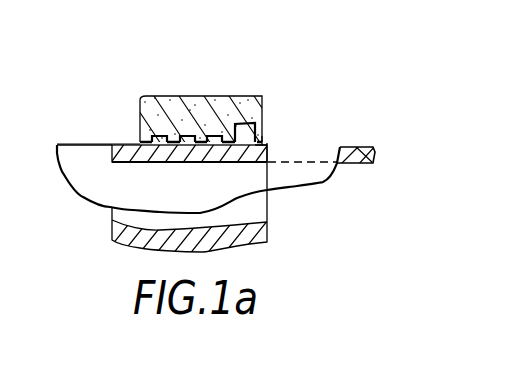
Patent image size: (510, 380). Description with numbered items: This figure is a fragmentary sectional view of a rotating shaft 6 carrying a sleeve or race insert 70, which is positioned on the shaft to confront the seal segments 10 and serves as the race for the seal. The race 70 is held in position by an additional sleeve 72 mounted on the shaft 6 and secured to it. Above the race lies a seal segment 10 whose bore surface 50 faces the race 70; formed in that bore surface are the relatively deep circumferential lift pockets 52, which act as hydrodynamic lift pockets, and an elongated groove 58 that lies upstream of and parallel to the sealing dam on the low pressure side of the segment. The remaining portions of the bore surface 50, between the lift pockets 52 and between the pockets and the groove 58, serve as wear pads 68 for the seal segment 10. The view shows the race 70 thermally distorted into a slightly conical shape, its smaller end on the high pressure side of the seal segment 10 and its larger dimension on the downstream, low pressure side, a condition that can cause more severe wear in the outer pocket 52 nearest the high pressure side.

The shaft 6 is at (82, 128).
The seal segment 10 is at (212, 76).
The bore surface 50 is at (195, 148).
The lift pockets 52 is at (187, 142).
The groove 58 is at (243, 135).
The wear pads 68 is at (263, 146).
The sleeve or race insert 70 is at (122, 144).
The additional sleeve 72 is at (352, 155).